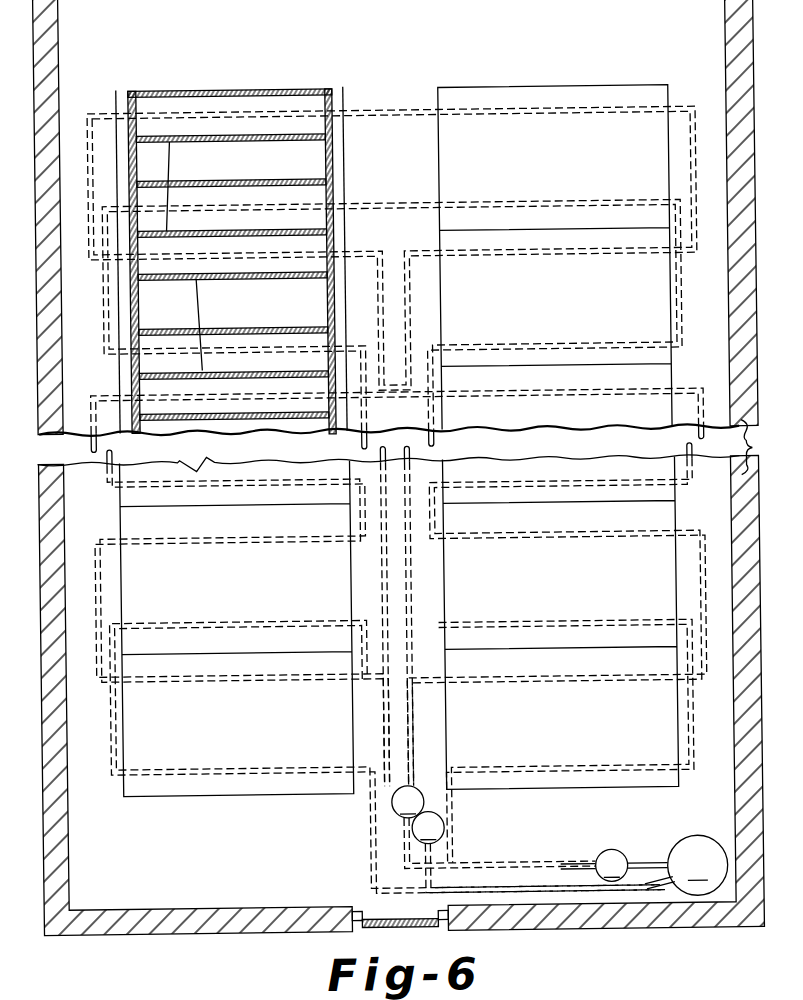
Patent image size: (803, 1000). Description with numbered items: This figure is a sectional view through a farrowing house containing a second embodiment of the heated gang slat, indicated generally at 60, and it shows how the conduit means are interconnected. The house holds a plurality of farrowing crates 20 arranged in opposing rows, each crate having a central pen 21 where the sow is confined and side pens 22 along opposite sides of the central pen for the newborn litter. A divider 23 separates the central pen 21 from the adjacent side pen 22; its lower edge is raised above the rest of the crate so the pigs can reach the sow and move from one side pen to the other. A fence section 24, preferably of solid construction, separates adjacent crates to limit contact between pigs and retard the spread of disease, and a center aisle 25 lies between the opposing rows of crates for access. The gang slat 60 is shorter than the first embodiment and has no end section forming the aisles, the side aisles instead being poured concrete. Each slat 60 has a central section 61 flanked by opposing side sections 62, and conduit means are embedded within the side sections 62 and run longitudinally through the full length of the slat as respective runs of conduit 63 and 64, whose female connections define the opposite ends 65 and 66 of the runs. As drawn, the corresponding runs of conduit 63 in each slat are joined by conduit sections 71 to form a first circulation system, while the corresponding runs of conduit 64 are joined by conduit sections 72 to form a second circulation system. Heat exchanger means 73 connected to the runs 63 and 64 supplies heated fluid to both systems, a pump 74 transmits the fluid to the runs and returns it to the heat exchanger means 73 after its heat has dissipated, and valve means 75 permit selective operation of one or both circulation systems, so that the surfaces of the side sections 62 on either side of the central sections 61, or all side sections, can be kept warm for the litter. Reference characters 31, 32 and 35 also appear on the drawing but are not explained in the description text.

The farrowing crate 20 is at (345, 146).
The central pen 21 is at (346, 165).
The side pen 22 is at (226, 88).
The divider 23 is at (272, 180).
The fence section 24 is at (126, 86).
The center aisle 25 is at (380, 602).
The base 31 is at (476, 990).
The support 32 is at (120, 998).
The mounting block 35 is at (72, 999).
The gang slat 60 is at (352, 180).
The central section 61 is at (196, 170).
The side section 62 is at (198, 140).
The run of conduit 63 is at (297, 206).
The run of conduit 64 is at (292, 108).
The end of the runs 65 is at (352, 108).
The end of the runs 66 is at (108, 112).
The conduit section 71 is at (102, 322).
The conduit section 72 is at (92, 208).
The heat exchanger means 73 is at (708, 838).
The pump 74 is at (624, 854).
The valve means 75 is at (440, 828).